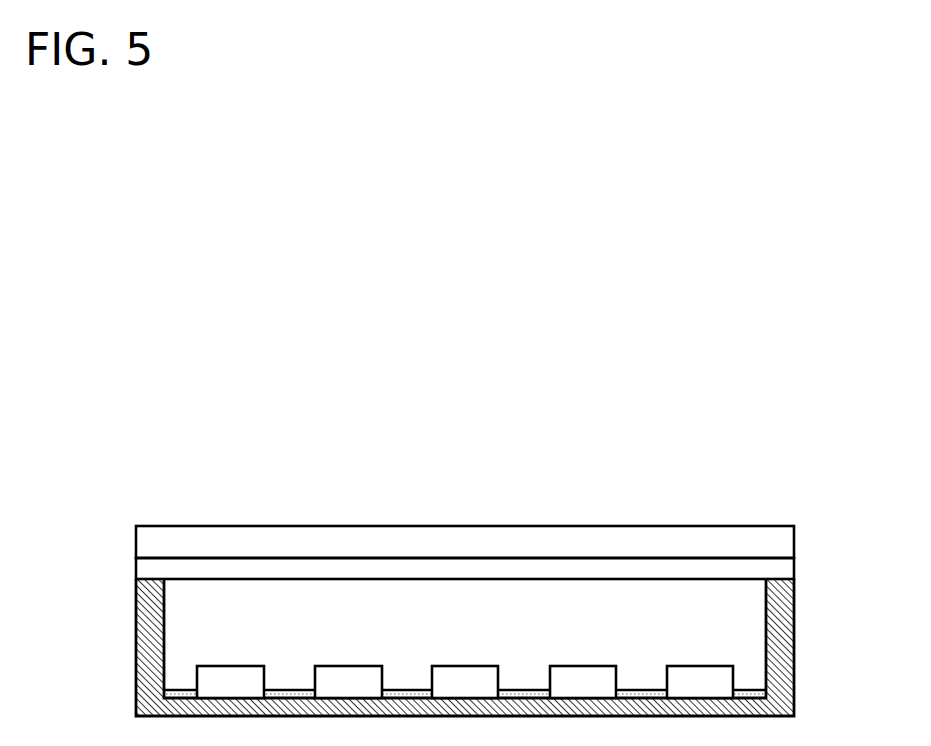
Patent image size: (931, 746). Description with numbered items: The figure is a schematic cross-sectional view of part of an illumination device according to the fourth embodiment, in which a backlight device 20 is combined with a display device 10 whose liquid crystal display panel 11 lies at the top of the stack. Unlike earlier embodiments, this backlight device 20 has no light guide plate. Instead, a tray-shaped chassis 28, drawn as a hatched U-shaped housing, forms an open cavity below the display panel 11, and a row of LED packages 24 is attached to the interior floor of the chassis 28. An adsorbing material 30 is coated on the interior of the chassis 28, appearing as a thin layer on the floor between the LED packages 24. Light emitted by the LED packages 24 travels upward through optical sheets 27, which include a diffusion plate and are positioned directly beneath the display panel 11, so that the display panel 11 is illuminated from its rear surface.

The display device 10 is at (125, 513).
The display panel 11 is at (795, 540).
The backlight device 20 is at (125, 623).
The LED package 24 is at (466, 666).
The optical sheets 27 is at (795, 570).
The chassis 28 is at (795, 637).
The adsorbing material 30 is at (644, 690).